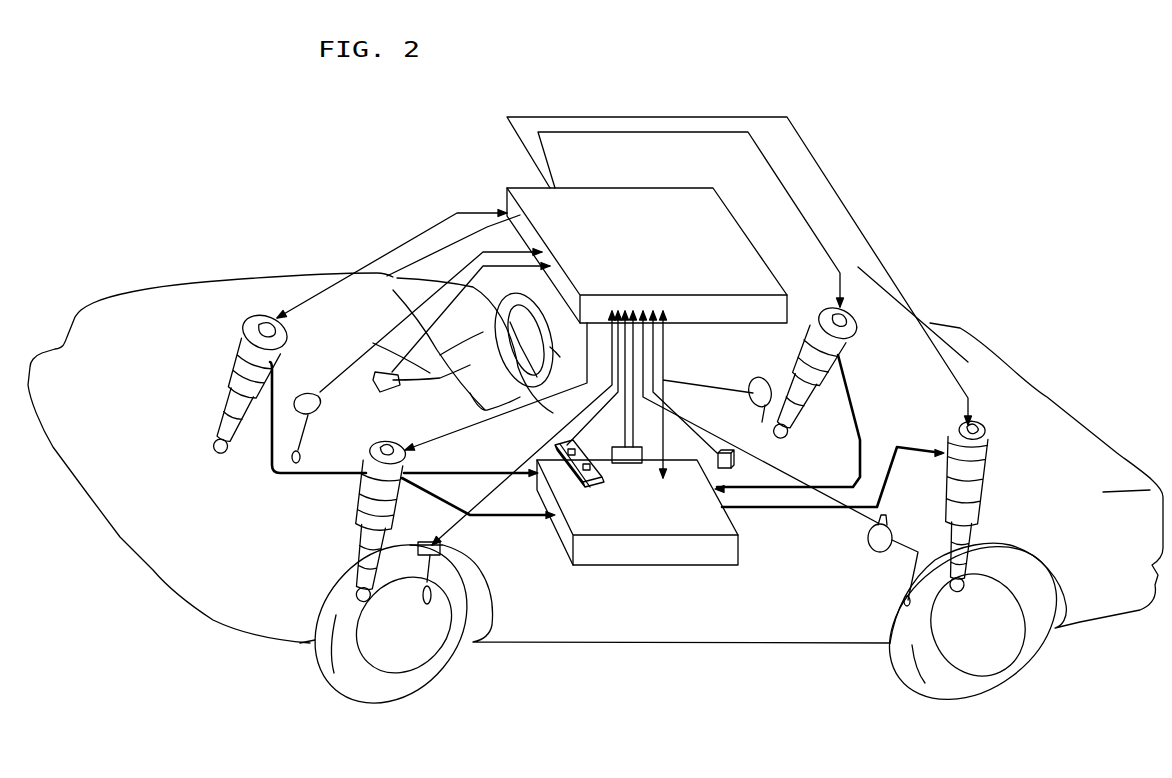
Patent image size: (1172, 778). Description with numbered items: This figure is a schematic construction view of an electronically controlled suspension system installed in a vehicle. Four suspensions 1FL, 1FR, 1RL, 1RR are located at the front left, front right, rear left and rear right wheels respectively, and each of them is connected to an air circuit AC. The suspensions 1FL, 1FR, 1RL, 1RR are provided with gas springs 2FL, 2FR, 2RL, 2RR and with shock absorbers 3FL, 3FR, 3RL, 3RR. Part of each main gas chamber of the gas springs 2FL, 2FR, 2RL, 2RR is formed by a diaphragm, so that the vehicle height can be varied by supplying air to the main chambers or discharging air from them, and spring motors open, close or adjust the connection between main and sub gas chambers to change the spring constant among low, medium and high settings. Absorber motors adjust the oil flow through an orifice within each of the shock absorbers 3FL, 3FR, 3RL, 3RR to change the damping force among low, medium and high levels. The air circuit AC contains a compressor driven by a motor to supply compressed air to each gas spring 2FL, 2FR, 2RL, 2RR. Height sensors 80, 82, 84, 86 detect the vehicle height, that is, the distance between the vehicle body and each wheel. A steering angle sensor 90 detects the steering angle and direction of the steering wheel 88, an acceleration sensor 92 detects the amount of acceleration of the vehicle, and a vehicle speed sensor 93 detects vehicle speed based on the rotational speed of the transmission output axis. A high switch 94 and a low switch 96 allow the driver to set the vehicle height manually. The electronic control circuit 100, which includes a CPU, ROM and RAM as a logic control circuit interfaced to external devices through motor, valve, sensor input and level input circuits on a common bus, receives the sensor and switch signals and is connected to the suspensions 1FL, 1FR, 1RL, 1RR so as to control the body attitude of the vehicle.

The suspension 1FR is at (237, 385).
The gas spring 2FR is at (265, 332).
The shock absorber 3FR is at (230, 422).
The suspension 1FL is at (347, 521).
The gas spring 2FL is at (387, 452).
The shock absorber 3FL is at (367, 564).
The suspension 1RR is at (836, 374).
The gas spring 2RR is at (838, 323).
The shock absorber 3RR is at (792, 408).
The suspension 1RL is at (996, 507).
The gas spring 2RL is at (971, 430).
The shock absorber 3RL is at (958, 557).
The height sensor 80 is at (443, 555).
The height sensor 82 is at (298, 393).
The height sensor 84 is at (898, 555).
The height sensor 86 is at (757, 380).
The steering wheel 88 is at (566, 359).
The steering angle sensor 90 is at (377, 373).
The acceleration sensor 92 is at (641, 452).
The vehicle speed sensor 93 is at (732, 464).
The high switch 94 is at (580, 446).
The low switch 96 is at (596, 468).
The electronic control circuit 100 is at (670, 188).
The air circuit AC is at (717, 560).